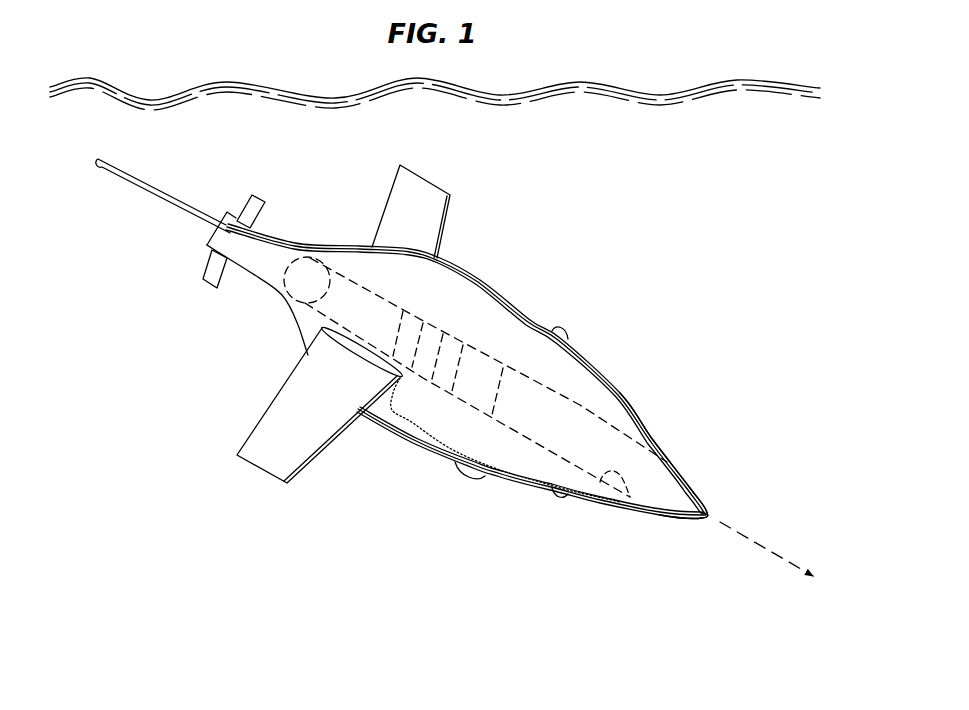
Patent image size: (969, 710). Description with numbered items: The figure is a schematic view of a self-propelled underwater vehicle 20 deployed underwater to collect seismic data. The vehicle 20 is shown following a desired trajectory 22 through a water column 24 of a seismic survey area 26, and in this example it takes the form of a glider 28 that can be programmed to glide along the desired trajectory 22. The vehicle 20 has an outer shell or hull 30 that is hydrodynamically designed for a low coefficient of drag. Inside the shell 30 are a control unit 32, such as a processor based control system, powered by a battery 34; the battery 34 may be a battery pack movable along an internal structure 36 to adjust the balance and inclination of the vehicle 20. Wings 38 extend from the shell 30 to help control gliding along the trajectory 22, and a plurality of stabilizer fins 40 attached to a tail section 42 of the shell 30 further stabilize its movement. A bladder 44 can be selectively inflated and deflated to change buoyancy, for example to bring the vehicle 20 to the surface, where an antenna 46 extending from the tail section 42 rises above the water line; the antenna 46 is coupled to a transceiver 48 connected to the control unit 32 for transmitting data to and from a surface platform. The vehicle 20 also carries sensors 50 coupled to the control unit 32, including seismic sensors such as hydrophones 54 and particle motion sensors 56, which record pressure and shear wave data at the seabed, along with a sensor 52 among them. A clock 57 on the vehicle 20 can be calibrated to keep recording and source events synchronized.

The self-propelled underwater vehicle 20 is at (515, 262).
The desired trajectory 22 is at (773, 547).
The water column 24 is at (708, 247).
The seismic survey area 26 is at (668, 80).
The glider 28 is at (628, 400).
The outer shell or hull 30 is at (663, 442).
The control unit 32 is at (435, 333).
The battery 34 is at (490, 366).
The internal structure 36 is at (627, 500).
The wings 38 is at (452, 200).
The stabilizer fins 40 is at (247, 211).
The tail section 42 is at (238, 262).
The bladder 44 is at (290, 262).
The antenna 46 is at (137, 190).
The transceiver 48 is at (403, 311).
The sensors 50 is at (534, 419).
The upper sensor 52 is at (568, 338).
The hydrophones 54 is at (461, 476).
The particle motion sensors 56 is at (558, 500).
The clock 57 is at (457, 349).